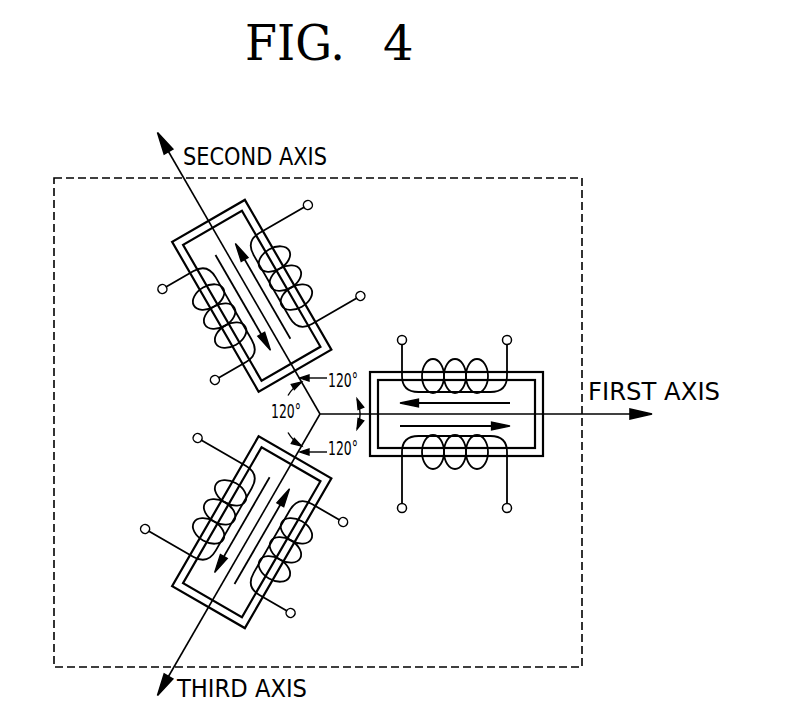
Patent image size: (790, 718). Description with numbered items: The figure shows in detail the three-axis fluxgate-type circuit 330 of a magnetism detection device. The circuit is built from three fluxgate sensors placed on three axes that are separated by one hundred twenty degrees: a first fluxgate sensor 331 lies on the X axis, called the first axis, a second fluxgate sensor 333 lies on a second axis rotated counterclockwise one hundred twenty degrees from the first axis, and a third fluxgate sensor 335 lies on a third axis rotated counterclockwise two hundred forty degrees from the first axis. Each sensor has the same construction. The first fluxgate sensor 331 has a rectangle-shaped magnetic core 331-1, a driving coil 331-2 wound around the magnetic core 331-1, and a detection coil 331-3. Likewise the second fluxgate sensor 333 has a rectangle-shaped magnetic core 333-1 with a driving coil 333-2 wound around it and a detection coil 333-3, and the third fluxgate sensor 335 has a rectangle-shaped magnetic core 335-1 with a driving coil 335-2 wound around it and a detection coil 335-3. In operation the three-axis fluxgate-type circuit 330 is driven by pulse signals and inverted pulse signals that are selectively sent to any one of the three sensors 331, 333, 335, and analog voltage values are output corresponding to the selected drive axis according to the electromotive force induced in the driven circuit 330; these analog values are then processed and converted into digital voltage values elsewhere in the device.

The three-axis fluxgate-type circuit 330 is at (582, 242).
The first fluxgate sensor 331 is at (518, 445).
The magnetic core 331-1 is at (528, 480).
The driving coil 331-2 is at (508, 357).
The detection coil 331-3 is at (405, 494).
The second fluxgate sensor 333 is at (245, 263).
The magnetic core 333-1 is at (250, 207).
The driving coil 333-2 is at (312, 212).
The detection coil 333-3 is at (183, 281).
The third fluxgate sensor 335 is at (236, 540).
The magnetic core 335-1 is at (192, 603).
The driving coil 335-2 is at (298, 610).
The detection coil 335-3 is at (167, 530).